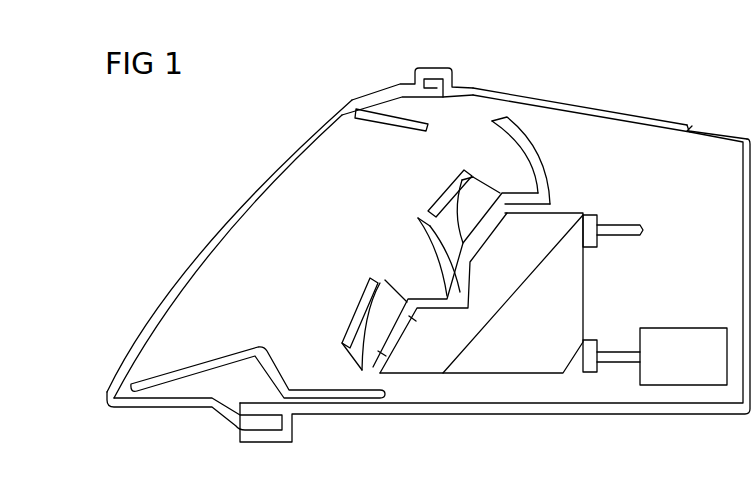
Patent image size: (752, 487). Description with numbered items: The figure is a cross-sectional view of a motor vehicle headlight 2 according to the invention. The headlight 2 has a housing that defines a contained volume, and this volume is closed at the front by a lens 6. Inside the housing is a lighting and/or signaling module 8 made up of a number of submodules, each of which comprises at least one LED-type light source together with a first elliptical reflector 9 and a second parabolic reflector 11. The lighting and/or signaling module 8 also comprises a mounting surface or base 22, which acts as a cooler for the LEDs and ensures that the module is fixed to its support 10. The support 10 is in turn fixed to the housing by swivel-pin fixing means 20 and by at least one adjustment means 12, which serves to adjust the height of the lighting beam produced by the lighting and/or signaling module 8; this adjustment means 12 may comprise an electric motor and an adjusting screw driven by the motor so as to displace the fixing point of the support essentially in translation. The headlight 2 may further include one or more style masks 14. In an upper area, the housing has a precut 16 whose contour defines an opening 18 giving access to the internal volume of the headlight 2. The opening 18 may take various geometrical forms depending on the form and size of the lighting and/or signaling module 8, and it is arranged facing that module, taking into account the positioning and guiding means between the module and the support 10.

The headlight 2 is at (712, 107).
The lens 6 is at (247, 200).
The lighting and/or signaling module 8 is at (346, 311).
The first elliptical reflector 9 is at (487, 193).
The support 10 is at (568, 295).
The second parabolic reflector 11 is at (485, 130).
The adjustment means 12 is at (683, 343).
The style mask 14 is at (403, 132).
The precut 16 is at (476, 95).
The opening 18 is at (588, 102).
The swivel-pin fixing means 20 is at (625, 233).
The mounting surface or base 22 is at (447, 343).